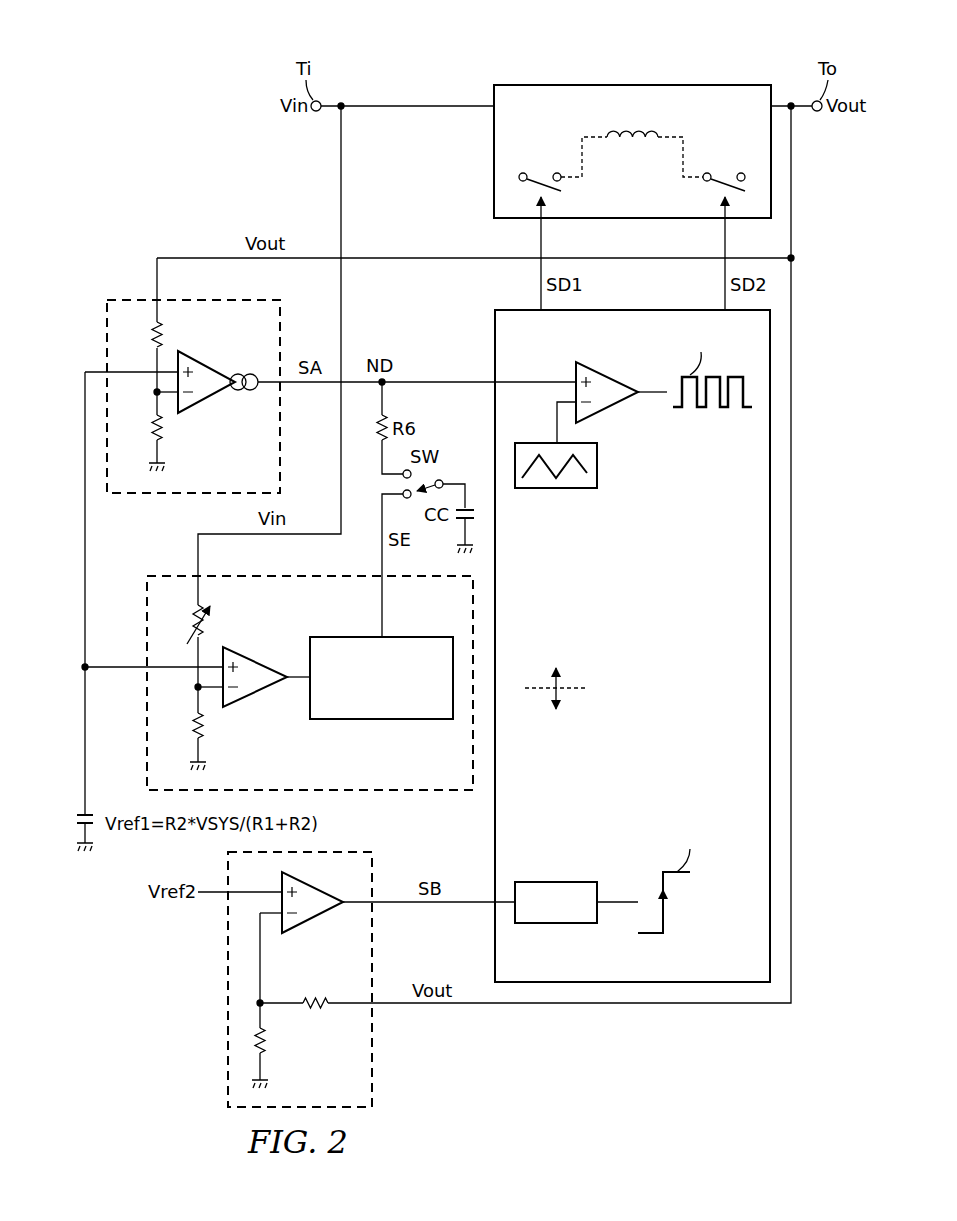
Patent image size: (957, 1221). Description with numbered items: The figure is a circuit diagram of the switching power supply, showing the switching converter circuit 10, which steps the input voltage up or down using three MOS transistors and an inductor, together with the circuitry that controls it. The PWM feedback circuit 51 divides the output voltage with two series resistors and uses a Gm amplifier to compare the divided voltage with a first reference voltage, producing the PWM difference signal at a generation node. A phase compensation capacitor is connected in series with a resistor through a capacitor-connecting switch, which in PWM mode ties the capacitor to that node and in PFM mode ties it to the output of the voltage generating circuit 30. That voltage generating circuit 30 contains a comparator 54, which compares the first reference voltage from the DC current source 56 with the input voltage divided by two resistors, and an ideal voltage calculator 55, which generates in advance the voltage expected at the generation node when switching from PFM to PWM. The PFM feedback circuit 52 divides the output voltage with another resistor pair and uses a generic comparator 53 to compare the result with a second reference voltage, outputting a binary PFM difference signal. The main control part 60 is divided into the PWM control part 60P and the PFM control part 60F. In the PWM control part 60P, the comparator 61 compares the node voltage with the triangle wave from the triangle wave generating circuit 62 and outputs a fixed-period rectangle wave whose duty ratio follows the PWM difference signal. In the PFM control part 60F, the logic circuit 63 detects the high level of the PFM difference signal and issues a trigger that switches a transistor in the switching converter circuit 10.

The switching converter circuit 10 is at (673, 83).
The voltage generating circuit 30 is at (279, 712).
The PWM feedback circuit 51 is at (104, 337).
The PFM feedback circuit 52 is at (266, 979).
The comparator 53 is at (308, 925).
The comparator 54 is at (256, 661).
The ideal voltage calculator 55 is at (347, 637).
The DC current source 56 is at (72, 822).
The main control part 60 is at (601, 646).
The comparator 61 is at (607, 373).
The triangle wave generating circuit 62 is at (560, 488).
The logic circuit 63 is at (555, 923).
The PWM control part 60P is at (556, 661).
The PFM control part 60F is at (555, 716).